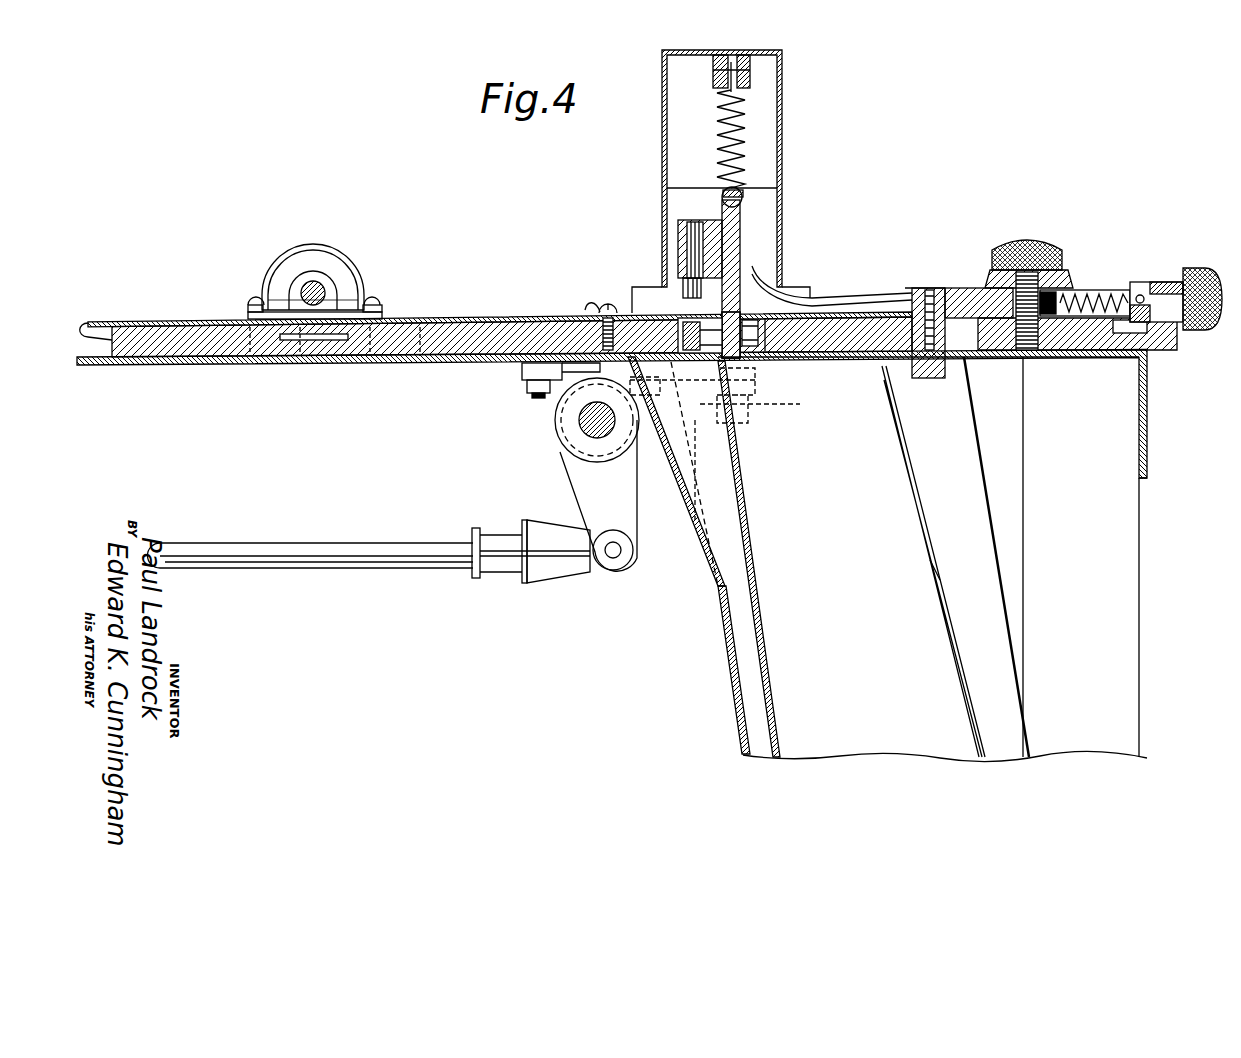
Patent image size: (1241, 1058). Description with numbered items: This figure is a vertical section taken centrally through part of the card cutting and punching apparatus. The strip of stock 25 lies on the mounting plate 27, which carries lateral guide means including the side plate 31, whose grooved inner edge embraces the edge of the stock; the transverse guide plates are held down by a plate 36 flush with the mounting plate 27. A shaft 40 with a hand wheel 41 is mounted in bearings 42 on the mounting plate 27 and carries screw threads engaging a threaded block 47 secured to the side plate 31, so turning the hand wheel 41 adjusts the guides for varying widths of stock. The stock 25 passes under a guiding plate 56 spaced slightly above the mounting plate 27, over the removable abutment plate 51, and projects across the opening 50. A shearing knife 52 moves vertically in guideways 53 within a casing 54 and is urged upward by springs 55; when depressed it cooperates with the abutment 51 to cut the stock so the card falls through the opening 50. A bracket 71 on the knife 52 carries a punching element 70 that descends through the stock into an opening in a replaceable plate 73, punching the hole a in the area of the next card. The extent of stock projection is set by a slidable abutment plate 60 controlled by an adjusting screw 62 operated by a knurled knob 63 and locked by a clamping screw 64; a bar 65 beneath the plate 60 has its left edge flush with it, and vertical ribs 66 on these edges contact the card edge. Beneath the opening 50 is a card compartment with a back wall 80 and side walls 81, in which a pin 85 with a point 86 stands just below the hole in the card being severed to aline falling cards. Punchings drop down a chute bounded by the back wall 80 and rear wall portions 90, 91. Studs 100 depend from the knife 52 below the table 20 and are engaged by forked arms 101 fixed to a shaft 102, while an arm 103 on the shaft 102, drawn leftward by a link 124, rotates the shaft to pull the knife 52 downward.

The table 20 is at (103, 367).
The strip of stock 25 is at (138, 320).
The mounting plate 27 is at (1165, 482).
The side plate 31 is at (473, 316).
The plate 36 is at (300, 337).
The shaft 40 is at (327, 285).
The hand wheel 41 is at (343, 253).
The bearings 42 is at (382, 307).
The block 47 is at (343, 290).
The opening 50 is at (800, 334).
The abutment plate 51 is at (743, 331).
The shearing knife 52 is at (742, 240).
The guideways 53 is at (767, 188).
The casing 54 is at (782, 82).
The springs 55 is at (750, 143).
The guiding plate 56 is at (621, 302).
The abutment plate 60 is at (952, 288).
The adjusting screw 62 is at (1123, 290).
The knurled knob 63 is at (1200, 267).
The clamping screw 64 is at (1062, 243).
The bar 65 is at (939, 371).
The ribs 66 is at (910, 288).
The punching element 70 is at (676, 284).
The bracket 71 is at (710, 222).
The plate 73 is at (551, 383).
The back wall 80 is at (752, 554).
The side walls 81 is at (989, 496).
The pin 85 is at (952, 673).
The point 86 is at (882, 366).
The rear wall portion 90 is at (686, 512).
The rear wall portion 91 is at (727, 666).
The studs 100 is at (745, 345).
The forked arms 101 is at (753, 396).
The shaft 102 is at (585, 418).
The arm 103 is at (574, 478).
The link 124 is at (425, 566).
The hole a is at (884, 326).